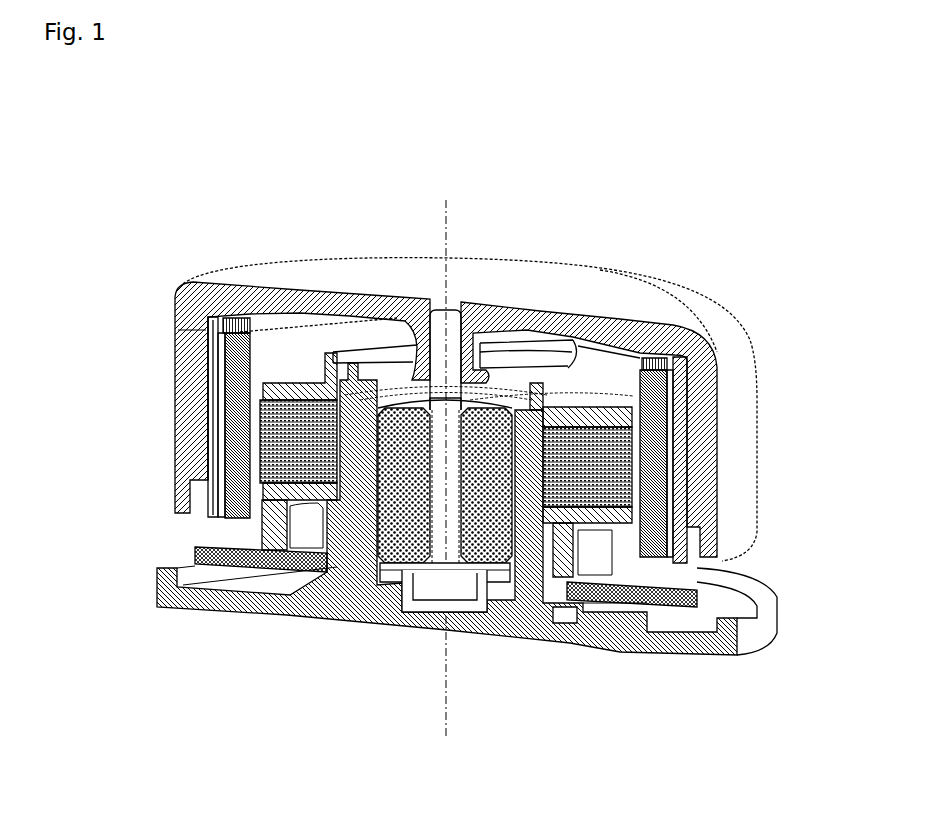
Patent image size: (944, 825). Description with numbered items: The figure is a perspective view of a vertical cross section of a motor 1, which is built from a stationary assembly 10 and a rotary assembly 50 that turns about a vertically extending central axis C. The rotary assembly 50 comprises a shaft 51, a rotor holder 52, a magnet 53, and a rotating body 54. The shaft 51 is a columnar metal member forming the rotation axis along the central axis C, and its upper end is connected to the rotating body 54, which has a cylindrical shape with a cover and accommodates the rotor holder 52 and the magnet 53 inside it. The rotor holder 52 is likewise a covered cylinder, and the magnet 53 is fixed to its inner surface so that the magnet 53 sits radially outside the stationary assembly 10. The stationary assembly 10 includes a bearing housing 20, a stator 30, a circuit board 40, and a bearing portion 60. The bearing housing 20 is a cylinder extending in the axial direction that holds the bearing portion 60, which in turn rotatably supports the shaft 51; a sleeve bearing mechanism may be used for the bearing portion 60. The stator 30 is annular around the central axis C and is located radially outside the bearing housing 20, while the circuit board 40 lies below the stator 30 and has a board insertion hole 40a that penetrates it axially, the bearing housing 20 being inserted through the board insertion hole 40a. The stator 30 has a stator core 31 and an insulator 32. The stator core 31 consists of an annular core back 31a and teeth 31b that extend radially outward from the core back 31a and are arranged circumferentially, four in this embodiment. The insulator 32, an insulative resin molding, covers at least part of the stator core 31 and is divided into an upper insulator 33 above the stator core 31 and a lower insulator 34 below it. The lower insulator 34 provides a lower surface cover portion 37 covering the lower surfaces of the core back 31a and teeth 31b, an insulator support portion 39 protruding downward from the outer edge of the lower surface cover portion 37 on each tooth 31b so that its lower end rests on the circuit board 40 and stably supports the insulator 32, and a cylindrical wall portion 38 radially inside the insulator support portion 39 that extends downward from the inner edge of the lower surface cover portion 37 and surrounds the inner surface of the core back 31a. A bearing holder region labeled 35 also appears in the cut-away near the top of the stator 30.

The motor 1 is at (690, 193).
The stationary assembly 10 is at (489, 381).
The bearing housing 20 is at (467, 544).
The stator 30 is at (537, 387).
The stator core 31 is at (537, 440).
The core back 31a is at (660, 480).
The teeth 31b is at (660, 445).
The insulator 32 is at (423, 357).
The upper insulator 33 is at (300, 392).
The lower insulator 34 is at (267, 380).
The bearing holder 35 is at (598, 348).
The lower surface cover portion 37 is at (585, 600).
The wall portion 38 is at (285, 615).
The insulator support portion 39 is at (643, 600).
The circuit board 40 is at (407, 604).
The board insertion hole 40a is at (563, 600).
The rotary assembly 50 is at (417, 345).
The shaft 51 is at (461, 310).
The rotor holder 52 is at (213, 393).
The magnet 53 is at (190, 330).
The rotating body 54 is at (207, 317).
The bearing portion 60 is at (397, 615).
The central axis C is at (446, 200).